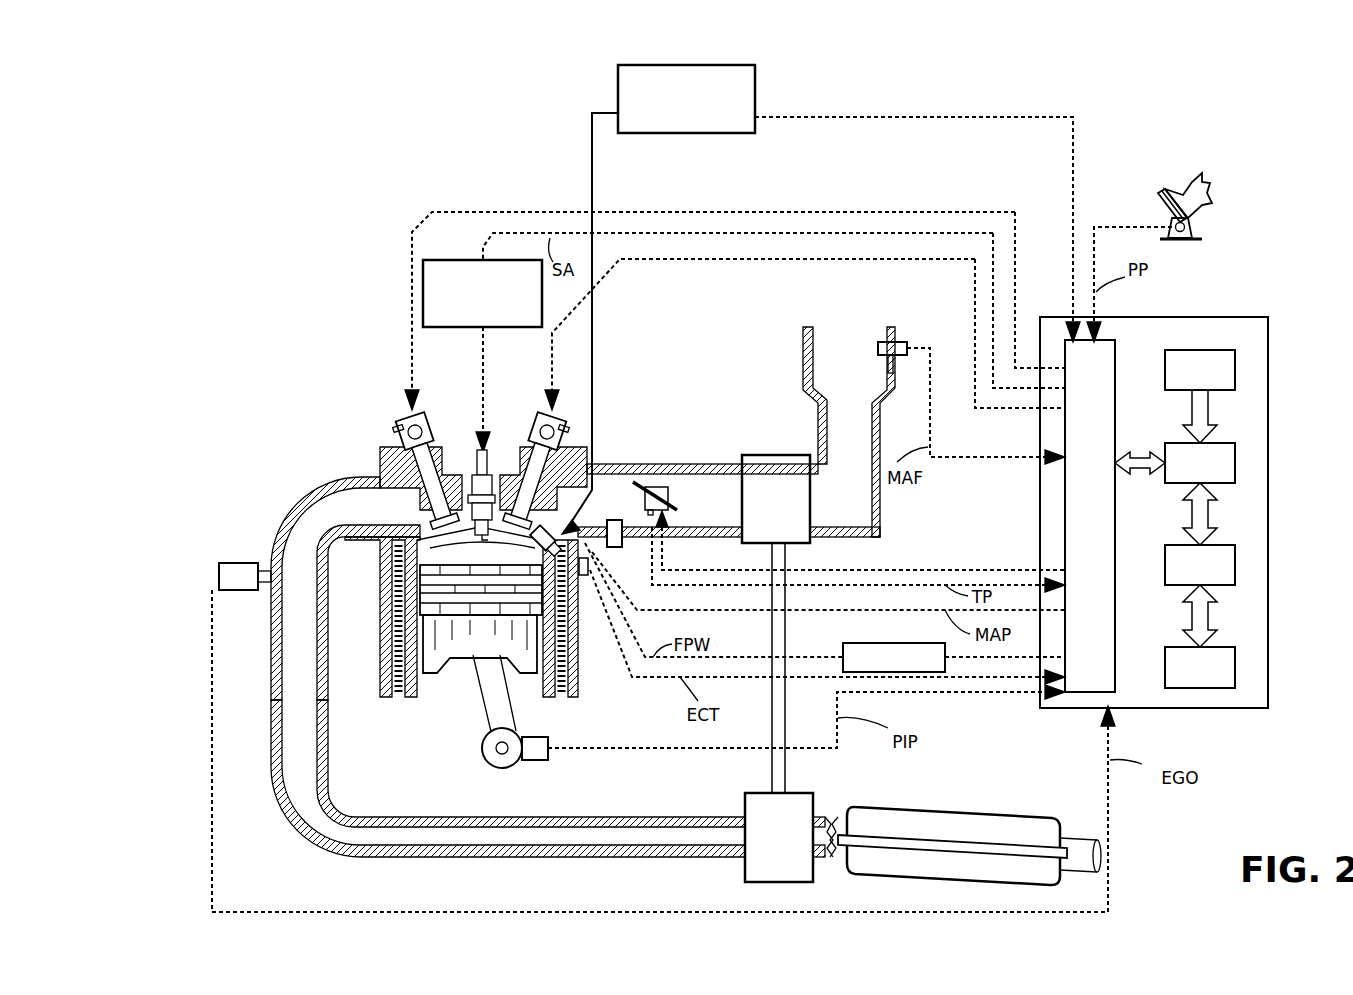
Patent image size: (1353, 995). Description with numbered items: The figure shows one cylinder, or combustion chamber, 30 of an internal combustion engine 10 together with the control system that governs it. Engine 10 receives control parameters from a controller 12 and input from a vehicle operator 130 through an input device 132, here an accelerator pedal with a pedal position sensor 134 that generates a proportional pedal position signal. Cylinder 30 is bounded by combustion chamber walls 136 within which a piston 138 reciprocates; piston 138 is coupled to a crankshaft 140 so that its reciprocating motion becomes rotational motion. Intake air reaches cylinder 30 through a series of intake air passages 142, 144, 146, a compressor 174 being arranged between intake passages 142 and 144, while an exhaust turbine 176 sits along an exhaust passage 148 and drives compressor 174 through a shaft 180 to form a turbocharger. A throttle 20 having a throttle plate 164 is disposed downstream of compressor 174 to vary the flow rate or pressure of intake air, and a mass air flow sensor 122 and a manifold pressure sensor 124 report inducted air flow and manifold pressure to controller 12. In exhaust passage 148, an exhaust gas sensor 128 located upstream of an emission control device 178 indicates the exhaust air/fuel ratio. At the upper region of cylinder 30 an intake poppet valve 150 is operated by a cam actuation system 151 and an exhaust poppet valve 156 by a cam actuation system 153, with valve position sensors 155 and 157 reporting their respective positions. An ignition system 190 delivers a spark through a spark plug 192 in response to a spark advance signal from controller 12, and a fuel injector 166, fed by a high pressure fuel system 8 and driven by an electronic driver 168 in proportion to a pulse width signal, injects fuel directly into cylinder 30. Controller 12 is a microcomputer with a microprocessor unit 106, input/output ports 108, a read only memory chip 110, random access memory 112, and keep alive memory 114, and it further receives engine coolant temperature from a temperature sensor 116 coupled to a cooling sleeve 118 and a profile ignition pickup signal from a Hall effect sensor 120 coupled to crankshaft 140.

The engine 10 is at (208, 150).
The high pressure fuel system 8 is at (757, 82).
The ignition system 190 is at (440, 260).
The vehicle operator 130 is at (1207, 190).
The input device 132 is at (1160, 203).
The pedal position sensor 134 is at (1192, 226).
The controller 12 is at (1191, 499).
The input/output ports 108 is at (1118, 342).
The read only memory chip 110 is at (1238, 366).
The microprocessor unit 106 is at (1238, 460).
The random access memory 112 is at (1238, 563).
The keep alive memory 114 is at (1238, 665).
The intake air passage 142 is at (834, 372).
The mass air flow sensor 122 is at (903, 342).
The compressor 174 is at (760, 455).
The intake air passage 144 is at (696, 507).
The throttle 20 is at (656, 487).
The throttle plate 164 is at (628, 481).
The manifold pressure sensor 124 is at (623, 553).
The intake air passage 146 is at (594, 507).
The exhaust passage 148 is at (334, 515).
The cylinder 30 is at (410, 548).
The cooling sleeve 118 is at (565, 650).
The temperature sensor 116 is at (590, 578).
The spark plug 192 is at (463, 457).
The cam actuation system 153 is at (425, 416).
The valve position sensor 157 is at (396, 430).
The exhaust poppet valve 156 is at (444, 521).
The cam actuation system 151 is at (537, 414).
The valve position sensor 155 is at (566, 432).
The intake poppet valve 150 is at (512, 520).
The fuel injector 166 is at (547, 534).
The electronic driver 168 is at (847, 643).
The combustion chamber walls 136 is at (420, 680).
The piston 138 is at (463, 645).
The crankshaft 140 is at (492, 765).
The Hall effect sensor 120 is at (538, 762).
The exhaust gas sensor 128 is at (219, 570).
The exhaust turbine 176 is at (745, 868).
The shaft 180 is at (778, 757).
The emission control device 178 is at (1020, 815).